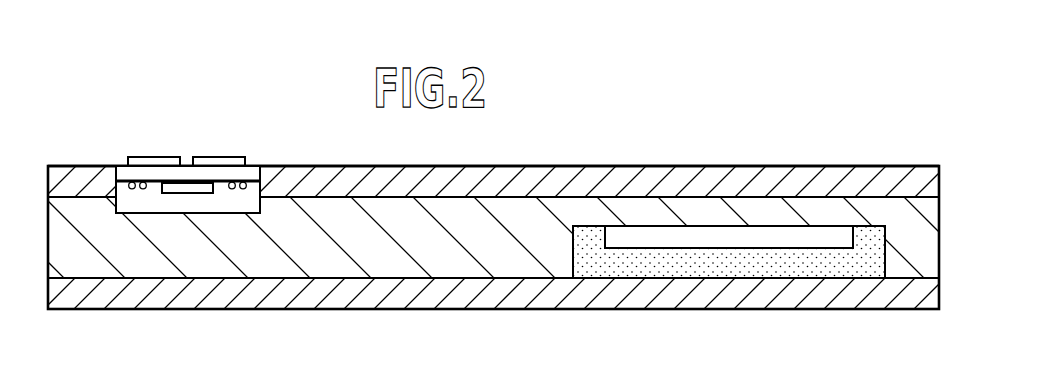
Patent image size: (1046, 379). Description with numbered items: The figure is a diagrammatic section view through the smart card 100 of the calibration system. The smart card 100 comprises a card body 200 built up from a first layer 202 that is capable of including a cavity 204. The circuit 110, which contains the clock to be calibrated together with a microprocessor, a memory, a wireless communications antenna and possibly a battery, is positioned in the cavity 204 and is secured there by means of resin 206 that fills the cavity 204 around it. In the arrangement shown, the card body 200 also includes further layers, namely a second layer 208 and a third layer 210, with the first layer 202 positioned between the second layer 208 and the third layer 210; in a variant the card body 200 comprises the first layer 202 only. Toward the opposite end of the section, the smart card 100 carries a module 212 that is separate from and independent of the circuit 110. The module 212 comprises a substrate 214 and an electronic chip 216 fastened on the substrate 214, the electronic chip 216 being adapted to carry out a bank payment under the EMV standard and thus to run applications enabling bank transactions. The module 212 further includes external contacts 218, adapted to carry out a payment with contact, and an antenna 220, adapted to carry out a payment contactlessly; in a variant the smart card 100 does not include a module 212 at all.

The smart card 100 is at (221, 324).
The card body 200 is at (532, 157).
The first layer 202 is at (917, 230).
The cavity 204 is at (894, 258).
The resin 206 is at (698, 265).
The circuit 110 is at (736, 237).
The second layer 208 is at (880, 187).
The third layer 210 is at (788, 287).
The module 212 is at (119, 155).
The substrate 214 is at (249, 177).
The electronic chip 216 is at (177, 188).
The external contacts 218 is at (155, 162).
The antenna 220 is at (131, 188).